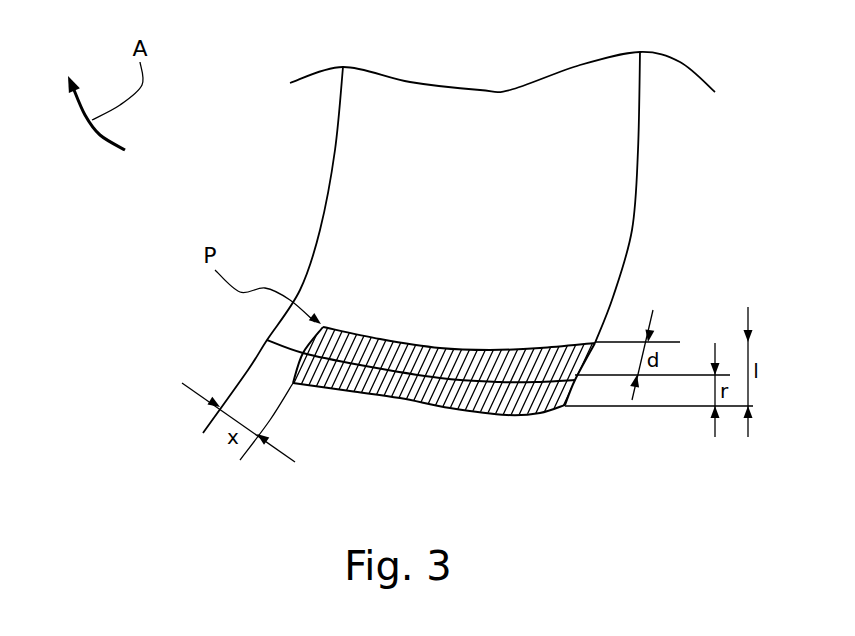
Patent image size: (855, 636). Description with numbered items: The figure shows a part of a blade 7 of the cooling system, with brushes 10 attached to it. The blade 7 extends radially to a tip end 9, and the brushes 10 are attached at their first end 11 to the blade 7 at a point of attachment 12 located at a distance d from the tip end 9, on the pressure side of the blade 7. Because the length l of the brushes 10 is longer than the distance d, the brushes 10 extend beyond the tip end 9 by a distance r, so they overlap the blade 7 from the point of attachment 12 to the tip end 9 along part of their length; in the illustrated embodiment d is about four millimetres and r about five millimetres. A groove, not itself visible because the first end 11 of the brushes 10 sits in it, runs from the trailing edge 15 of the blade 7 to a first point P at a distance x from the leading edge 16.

The blade 7 is at (474, 213).
The tip end 9 is at (262, 340).
The brushes 10 is at (478, 398).
The first end 11 is at (352, 332).
The point of attachment 12 is at (597, 340).
The trailing edge 15 is at (642, 142).
The leading edge 16 is at (327, 197).